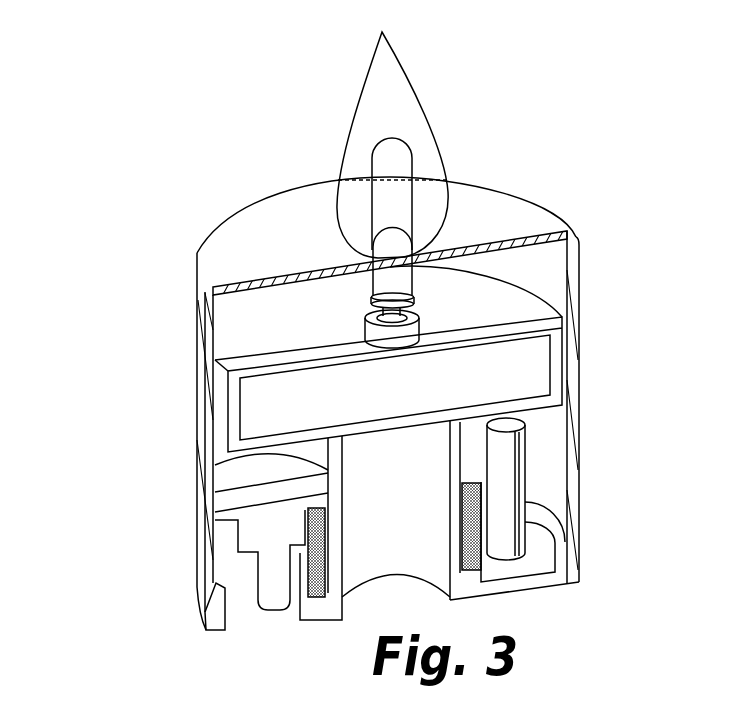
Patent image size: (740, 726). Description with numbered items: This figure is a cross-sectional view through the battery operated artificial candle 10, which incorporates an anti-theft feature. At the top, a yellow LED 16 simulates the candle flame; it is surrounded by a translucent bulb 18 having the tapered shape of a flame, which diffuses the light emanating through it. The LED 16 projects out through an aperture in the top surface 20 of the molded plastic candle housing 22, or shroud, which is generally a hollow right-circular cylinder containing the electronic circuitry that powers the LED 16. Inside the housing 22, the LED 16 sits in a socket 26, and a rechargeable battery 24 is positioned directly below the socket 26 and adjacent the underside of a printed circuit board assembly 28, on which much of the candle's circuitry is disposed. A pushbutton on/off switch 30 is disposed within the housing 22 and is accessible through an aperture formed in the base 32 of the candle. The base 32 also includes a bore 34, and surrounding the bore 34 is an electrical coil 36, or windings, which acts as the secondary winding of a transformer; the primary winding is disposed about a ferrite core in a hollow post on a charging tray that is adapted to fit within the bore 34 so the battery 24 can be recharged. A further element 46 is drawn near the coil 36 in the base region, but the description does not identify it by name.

The flameless candle assembly 10 is at (120, 521).
The yellow LED 16 is at (393, 224).
The translucent bulb 18 is at (441, 156).
The top surface 20 is at (498, 214).
The candle housing 22 is at (579, 300).
The rechargeable battery 24 is at (390, 393).
The socket 26 is at (366, 330).
The printed circuit board assembly 28 is at (447, 318).
The pushbutton on/off switch 30 is at (258, 537).
The base 32 is at (547, 590).
The bore 34 is at (382, 505).
The electrical coil 36 is at (318, 597).
The curved support wall 46 is at (527, 500).